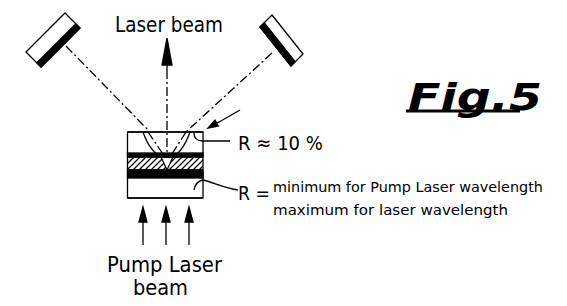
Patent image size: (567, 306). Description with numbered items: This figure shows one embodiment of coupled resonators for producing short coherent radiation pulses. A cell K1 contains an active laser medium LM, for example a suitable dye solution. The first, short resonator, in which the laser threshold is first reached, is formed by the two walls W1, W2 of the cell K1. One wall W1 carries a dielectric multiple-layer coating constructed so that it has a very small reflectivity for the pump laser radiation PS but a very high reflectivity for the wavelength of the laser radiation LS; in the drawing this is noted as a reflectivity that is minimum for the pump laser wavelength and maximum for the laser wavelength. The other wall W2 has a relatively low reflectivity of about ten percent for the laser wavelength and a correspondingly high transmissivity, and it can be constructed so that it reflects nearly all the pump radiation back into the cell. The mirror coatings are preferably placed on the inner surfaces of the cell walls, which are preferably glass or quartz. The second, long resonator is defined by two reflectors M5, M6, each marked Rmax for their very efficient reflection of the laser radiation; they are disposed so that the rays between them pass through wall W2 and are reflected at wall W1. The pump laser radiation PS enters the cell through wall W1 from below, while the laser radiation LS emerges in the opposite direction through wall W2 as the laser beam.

The reflector M5 is at (65, 43).
The reflector M6 is at (293, 68).
The maximum-reflectivity mirror coating Rmax is at (282, 58).
The wall W1 is at (137, 176).
The wall W2 is at (137, 133).
The laser radiation LS is at (168, 105).
The cell K1 is at (268, 123).
The active laser medium LM is at (203, 162).
The pump laser radiation PS is at (190, 228).